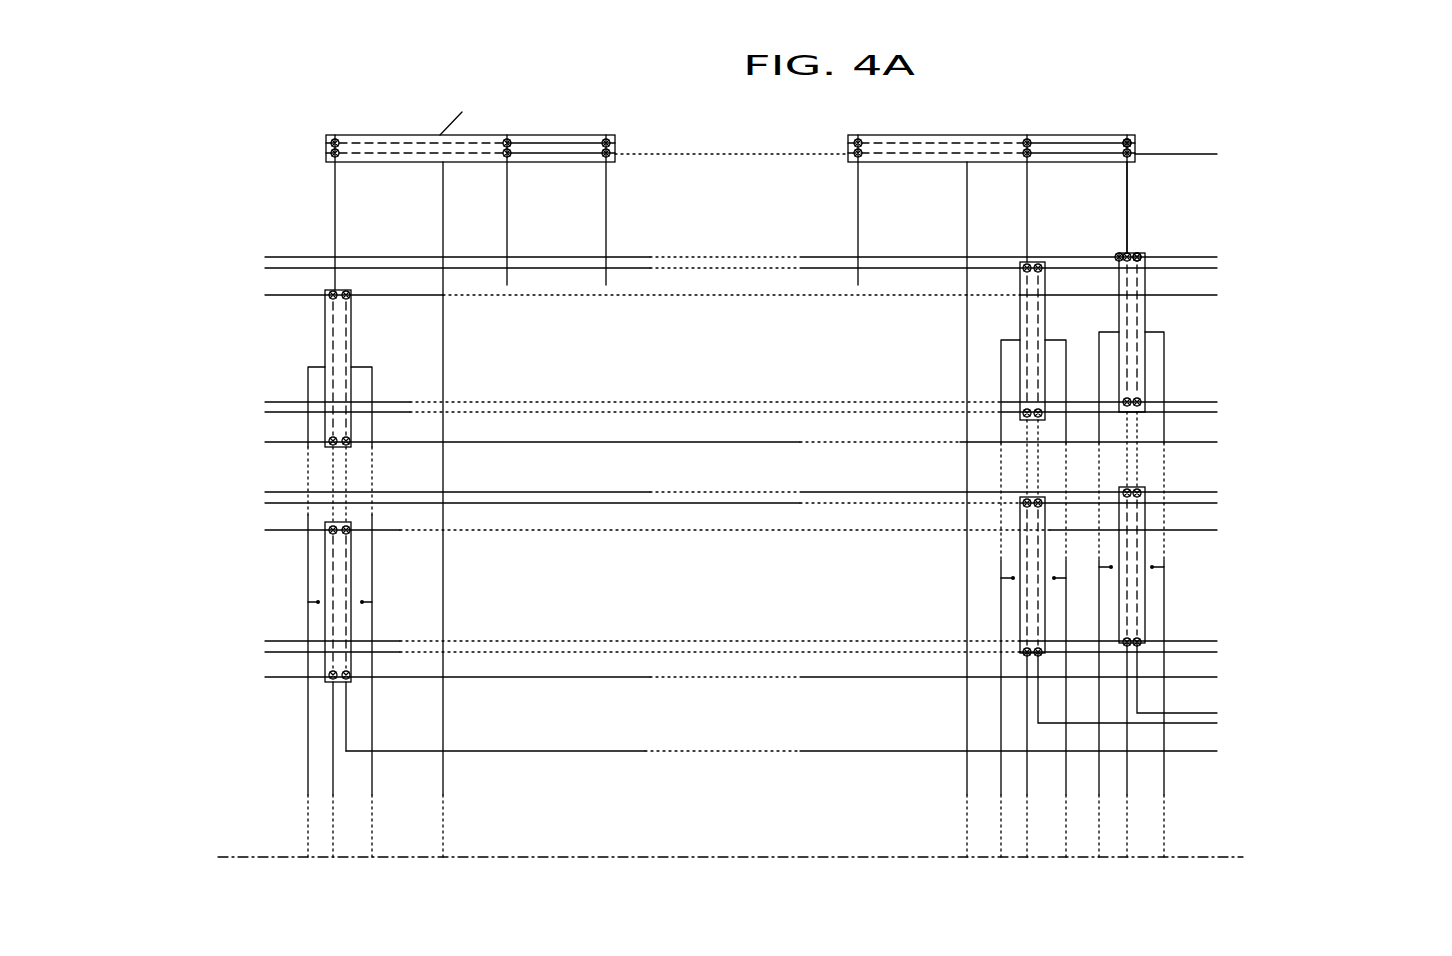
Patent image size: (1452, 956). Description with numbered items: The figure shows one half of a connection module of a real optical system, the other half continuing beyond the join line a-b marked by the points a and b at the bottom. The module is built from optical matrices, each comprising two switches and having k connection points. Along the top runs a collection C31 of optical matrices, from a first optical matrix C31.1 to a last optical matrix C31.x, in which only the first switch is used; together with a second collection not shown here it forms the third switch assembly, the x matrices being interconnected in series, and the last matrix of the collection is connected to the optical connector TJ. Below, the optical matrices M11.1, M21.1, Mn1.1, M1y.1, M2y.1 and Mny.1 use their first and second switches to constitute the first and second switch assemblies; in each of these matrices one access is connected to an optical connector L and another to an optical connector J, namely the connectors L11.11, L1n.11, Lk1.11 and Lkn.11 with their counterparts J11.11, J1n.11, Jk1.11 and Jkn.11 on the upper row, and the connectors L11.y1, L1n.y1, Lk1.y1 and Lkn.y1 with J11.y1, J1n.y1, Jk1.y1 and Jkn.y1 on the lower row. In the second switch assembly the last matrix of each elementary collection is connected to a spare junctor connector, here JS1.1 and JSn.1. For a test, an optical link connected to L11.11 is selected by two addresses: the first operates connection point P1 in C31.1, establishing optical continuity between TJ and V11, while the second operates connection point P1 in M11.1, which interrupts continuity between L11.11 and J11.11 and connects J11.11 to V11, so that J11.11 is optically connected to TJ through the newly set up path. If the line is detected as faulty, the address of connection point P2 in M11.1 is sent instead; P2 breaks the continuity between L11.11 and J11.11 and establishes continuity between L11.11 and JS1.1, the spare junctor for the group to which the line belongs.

The collection of optical matrices C31 is at (326, 148).
The optical matrix C31.x is at (497, 102).
The optical matrix C31.1 is at (960, 134).
The connection point P1 is at (1137, 146).
The optical connector TJ is at (1222, 150).
The optical path V11 is at (1127, 211).
The connection point P2 is at (1148, 250).
The optical connector L11.11 is at (265, 257).
The optical connector L1n.11 is at (265, 296).
The optical connector Lk1.11 is at (265, 402).
The optical connector Lkn.11 is at (265, 442).
The optical connector L11.y1 is at (265, 493).
The optical connector L1n.y1 is at (265, 530).
The optical connector Lk1.y1 is at (265, 641).
The optical connector Lkn.y1 is at (265, 677).
The optical connector J11.11 is at (1218, 258).
The optical connector J1n.11 is at (1222, 295).
The optical connector Jk1.11 is at (1218, 403).
The optical connector Jkn.11 is at (1218, 443).
The optical connector J11.y1 is at (1218, 493).
The optical connector J1n.y1 is at (1220, 531).
The optical connector Jk1.y1 is at (1218, 641).
The optical connector Jkn.y1 is at (1218, 677).
The optical connector JS1.1 is at (1220, 713).
The optical connector JSn.1 is at (1220, 751).
The optical matrix Mn1.1 is at (343, 392).
The optical matrix Mny.1 is at (342, 625).
The optical matrix M21.1 is at (1033, 373).
The optical matrix M11.1 is at (1135, 373).
The optical matrix M2y.1 is at (1030, 618).
The optical matrix M1y.1 is at (1133, 618).
The join line end a is at (246, 842).
The join line end b is at (1211, 842).